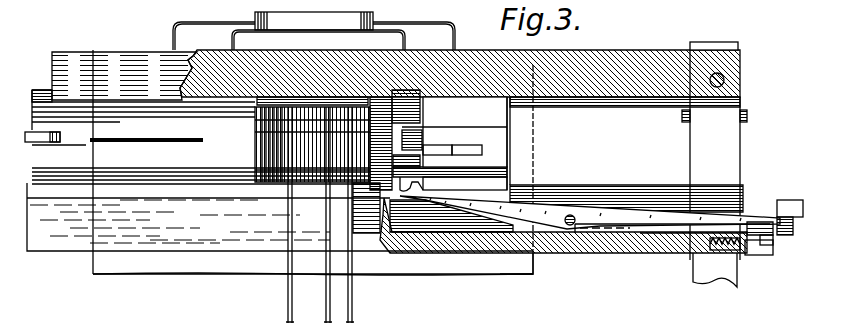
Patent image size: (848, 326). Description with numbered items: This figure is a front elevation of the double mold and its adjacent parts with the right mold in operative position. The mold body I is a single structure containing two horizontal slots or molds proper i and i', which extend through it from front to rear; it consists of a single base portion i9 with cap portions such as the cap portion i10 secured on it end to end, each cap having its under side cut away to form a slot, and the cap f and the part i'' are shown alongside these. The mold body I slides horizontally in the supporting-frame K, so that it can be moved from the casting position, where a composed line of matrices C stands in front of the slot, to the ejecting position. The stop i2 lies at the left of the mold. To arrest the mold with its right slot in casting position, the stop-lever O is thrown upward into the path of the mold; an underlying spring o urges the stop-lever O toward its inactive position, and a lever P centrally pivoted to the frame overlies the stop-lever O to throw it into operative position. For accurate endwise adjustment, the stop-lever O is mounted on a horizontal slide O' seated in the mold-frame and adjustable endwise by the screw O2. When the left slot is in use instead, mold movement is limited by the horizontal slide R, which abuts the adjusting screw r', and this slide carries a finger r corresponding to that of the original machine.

The cap f is at (439, 28).
The supporting-frame K is at (460, 151).
The cap portion i10 is at (75, 130).
The mold body I is at (267, 144).
The armature stop i2 is at (45, 140).
The mold slot i is at (146, 152).
The matrices C is at (247, 128).
The mold slot i' is at (296, 215).
The base portion i9 is at (200, 170).
The armature extension i'' is at (454, 143).
The finger r is at (425, 138).
The horizontal slide R is at (455, 141).
The adjusting screw r' is at (714, 132).
The stop-lever O is at (585, 236).
The spring o is at (660, 224).
The horizontal slide O' is at (672, 260).
The screw O2 is at (770, 257).
The lever P is at (787, 198).